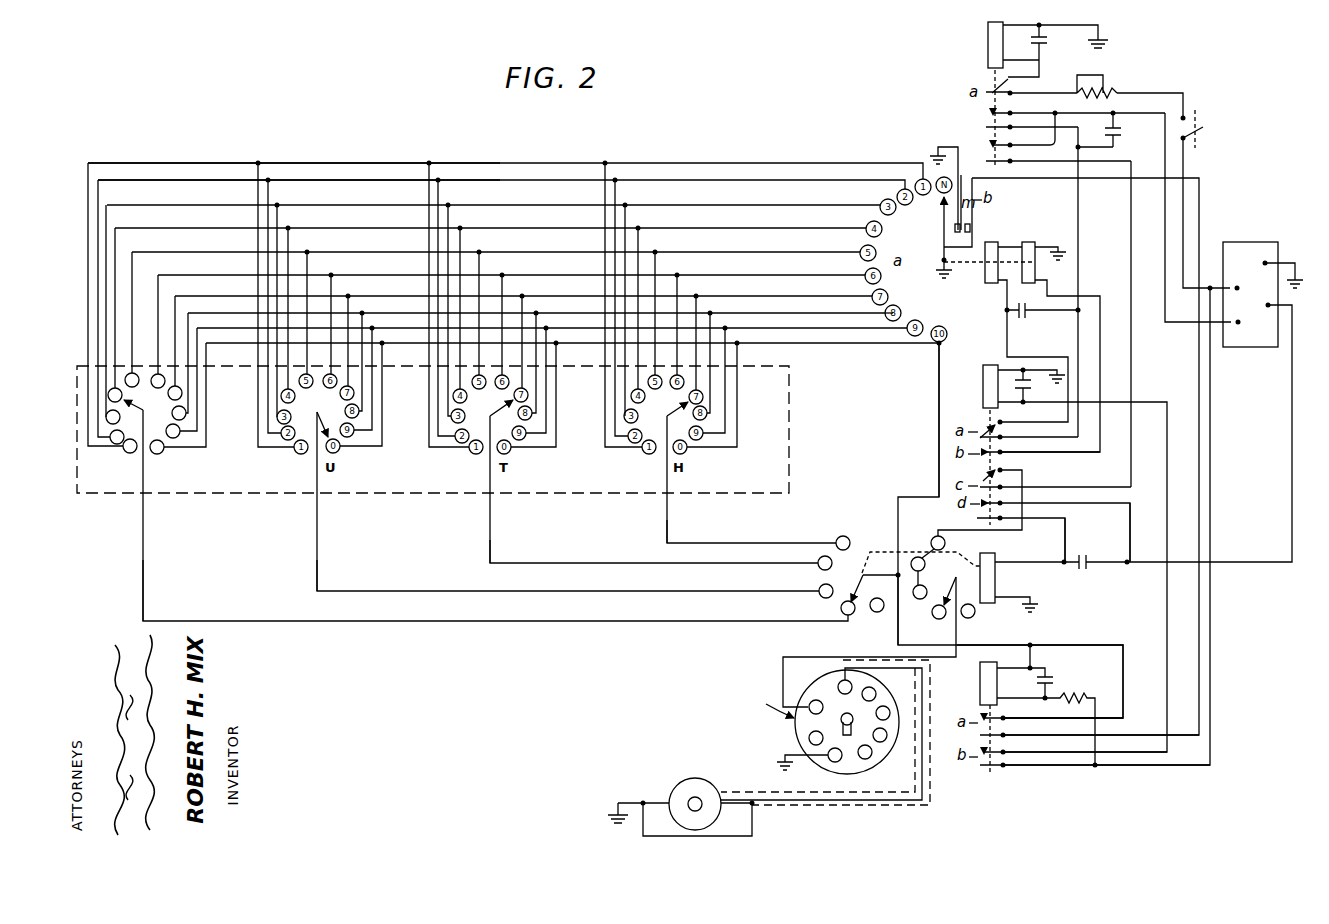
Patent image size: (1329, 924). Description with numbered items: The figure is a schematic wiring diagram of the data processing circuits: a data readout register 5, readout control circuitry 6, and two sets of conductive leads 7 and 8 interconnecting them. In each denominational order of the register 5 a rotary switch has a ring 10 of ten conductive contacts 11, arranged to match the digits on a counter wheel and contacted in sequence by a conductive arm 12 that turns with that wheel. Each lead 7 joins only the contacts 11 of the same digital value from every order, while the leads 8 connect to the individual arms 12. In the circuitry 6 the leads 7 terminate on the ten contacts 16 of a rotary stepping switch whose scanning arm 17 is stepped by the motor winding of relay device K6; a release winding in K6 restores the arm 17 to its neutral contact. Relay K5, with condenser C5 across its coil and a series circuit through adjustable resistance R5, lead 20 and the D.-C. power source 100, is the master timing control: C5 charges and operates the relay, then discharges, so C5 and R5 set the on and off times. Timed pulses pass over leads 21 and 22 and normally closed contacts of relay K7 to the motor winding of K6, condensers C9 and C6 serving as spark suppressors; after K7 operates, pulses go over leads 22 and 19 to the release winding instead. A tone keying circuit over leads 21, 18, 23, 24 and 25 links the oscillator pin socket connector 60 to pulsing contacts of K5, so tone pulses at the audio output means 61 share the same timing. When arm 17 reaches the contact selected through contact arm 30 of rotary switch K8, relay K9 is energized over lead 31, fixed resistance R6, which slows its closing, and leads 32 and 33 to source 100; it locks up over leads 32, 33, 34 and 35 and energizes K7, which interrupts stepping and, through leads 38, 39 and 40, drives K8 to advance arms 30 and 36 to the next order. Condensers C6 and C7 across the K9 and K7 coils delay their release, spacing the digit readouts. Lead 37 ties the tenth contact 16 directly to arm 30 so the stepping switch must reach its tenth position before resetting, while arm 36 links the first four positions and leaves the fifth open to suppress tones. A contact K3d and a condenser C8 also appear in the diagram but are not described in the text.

The data readout register 5 is at (793, 451).
The readout control circuitry 6 is at (968, 139).
The leads 7 is at (517, 168).
The leads 8 is at (141, 545).
The ring 10 is at (141, 376).
The contacts 11 is at (131, 454).
The electrically conductive arm 12 is at (121, 445).
The electrical contacts 16 is at (897, 306).
The scanning arm 17 is at (940, 234).
The lead 18 is at (1054, 163).
The lead 19 is at (1098, 296).
The lead 20 is at (1140, 93).
The lead 21 is at (1182, 325).
The lead 22 is at (1078, 199).
The lead 23 is at (1131, 211).
The lead 24 is at (955, 529).
The lead 25 is at (782, 661).
The contact arm 30 is at (855, 590).
The lead 31 is at (896, 634).
The lead 32 is at (1093, 764).
The lead 33 is at (1211, 405).
The lead 34 is at (1082, 641).
The lead 35 is at (1203, 190).
The contacting arm 36 is at (946, 593).
The lead 37 is at (937, 486).
The lead 38 is at (1291, 441).
The lead 39 is at (1130, 537).
The lead 40 is at (1063, 532).
The oscillator pin socket connector 60 is at (796, 736).
The audio output means 61 is at (673, 790).
The source of D.-C. power 100 is at (1258, 347).
The relay operated component K5 is at (988, 47).
The condenser C5 is at (1036, 50).
The adjustable resistance R5 is at (1100, 86).
The relay contact K3d is at (1199, 128).
The condenser C6 is at (1110, 133).
The relay device K6 is at (985, 281).
The condenser C9 is at (1042, 326).
The relay K7 is at (983, 388).
The condenser C7 is at (1034, 386).
The rotary switch K8 is at (996, 581).
The capacitor C8 is at (1062, 550).
The relay K9 is at (980, 688).
The fixed resistance R6 is at (1047, 719).